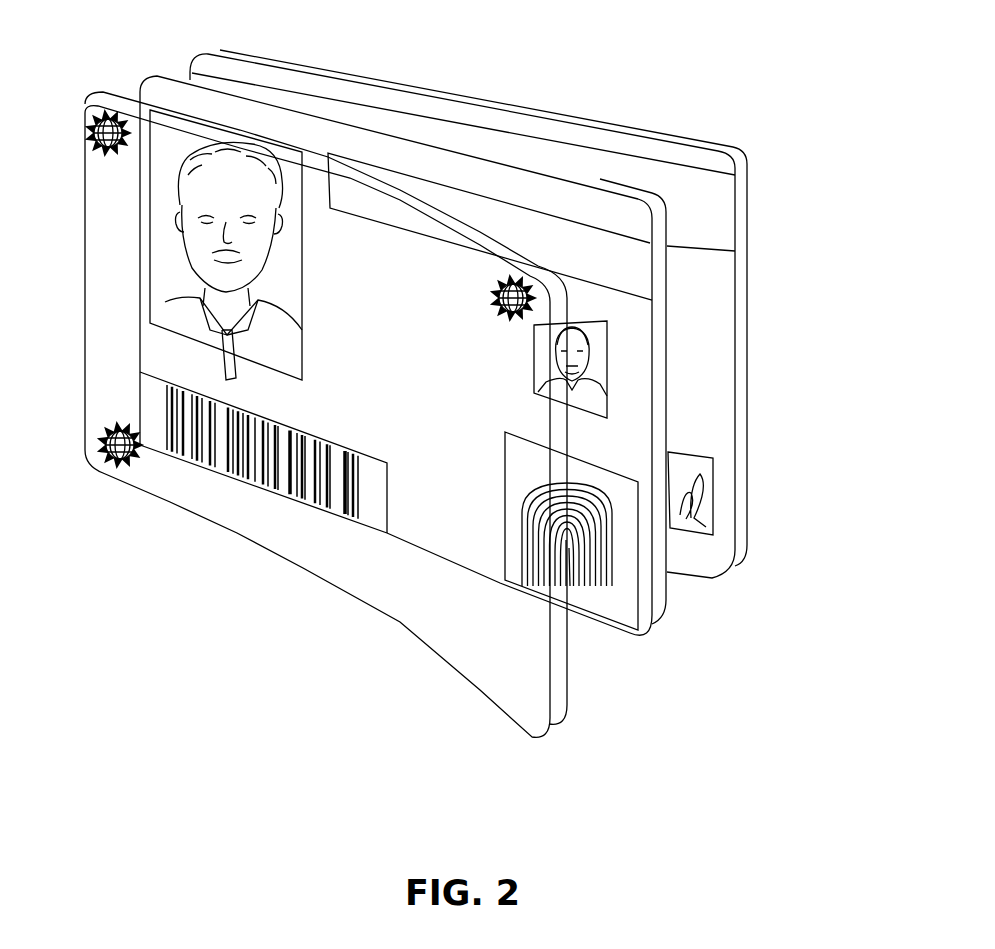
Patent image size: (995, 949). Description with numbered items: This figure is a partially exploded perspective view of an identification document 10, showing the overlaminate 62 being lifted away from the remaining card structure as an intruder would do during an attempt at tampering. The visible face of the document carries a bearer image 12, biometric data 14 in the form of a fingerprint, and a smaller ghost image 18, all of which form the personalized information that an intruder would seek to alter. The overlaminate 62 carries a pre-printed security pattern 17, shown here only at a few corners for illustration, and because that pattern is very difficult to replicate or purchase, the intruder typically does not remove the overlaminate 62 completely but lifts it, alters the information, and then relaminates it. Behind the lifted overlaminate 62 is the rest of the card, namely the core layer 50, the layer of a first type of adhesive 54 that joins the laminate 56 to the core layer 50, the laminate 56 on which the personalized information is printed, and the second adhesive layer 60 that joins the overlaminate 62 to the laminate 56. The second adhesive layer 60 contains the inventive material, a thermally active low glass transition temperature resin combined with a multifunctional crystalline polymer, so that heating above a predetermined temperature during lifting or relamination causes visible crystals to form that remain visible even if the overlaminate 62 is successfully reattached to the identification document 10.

The identification document 10 is at (206, 581).
The bearer image 12 is at (148, 257).
The biometric data 14 is at (616, 570).
The pre-printed security pattern 17 is at (86, 132).
The ghost image 18 is at (600, 379).
The core layer 50 is at (679, 344).
The first type of adhesive layer 54 is at (755, 401).
The laminate layer 56 is at (551, 253).
The second adhesive layer 60 is at (789, 472).
The overlaminate 62 is at (758, 165).